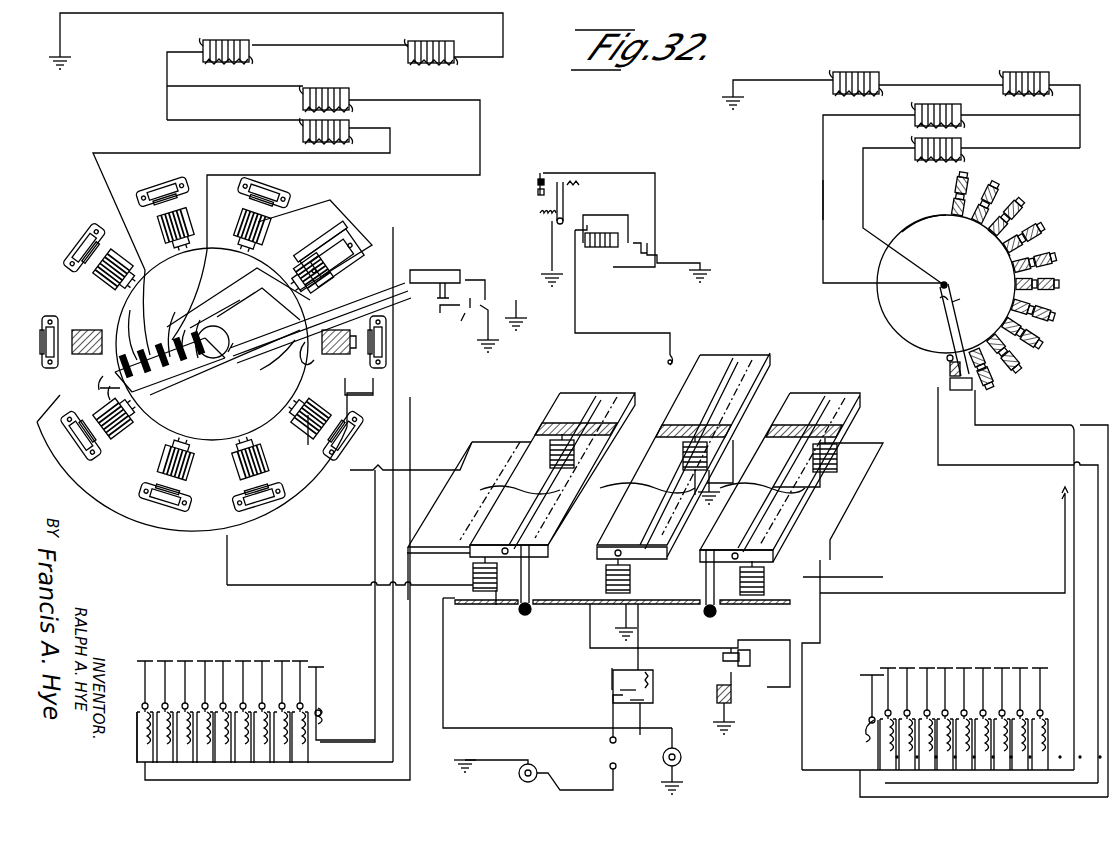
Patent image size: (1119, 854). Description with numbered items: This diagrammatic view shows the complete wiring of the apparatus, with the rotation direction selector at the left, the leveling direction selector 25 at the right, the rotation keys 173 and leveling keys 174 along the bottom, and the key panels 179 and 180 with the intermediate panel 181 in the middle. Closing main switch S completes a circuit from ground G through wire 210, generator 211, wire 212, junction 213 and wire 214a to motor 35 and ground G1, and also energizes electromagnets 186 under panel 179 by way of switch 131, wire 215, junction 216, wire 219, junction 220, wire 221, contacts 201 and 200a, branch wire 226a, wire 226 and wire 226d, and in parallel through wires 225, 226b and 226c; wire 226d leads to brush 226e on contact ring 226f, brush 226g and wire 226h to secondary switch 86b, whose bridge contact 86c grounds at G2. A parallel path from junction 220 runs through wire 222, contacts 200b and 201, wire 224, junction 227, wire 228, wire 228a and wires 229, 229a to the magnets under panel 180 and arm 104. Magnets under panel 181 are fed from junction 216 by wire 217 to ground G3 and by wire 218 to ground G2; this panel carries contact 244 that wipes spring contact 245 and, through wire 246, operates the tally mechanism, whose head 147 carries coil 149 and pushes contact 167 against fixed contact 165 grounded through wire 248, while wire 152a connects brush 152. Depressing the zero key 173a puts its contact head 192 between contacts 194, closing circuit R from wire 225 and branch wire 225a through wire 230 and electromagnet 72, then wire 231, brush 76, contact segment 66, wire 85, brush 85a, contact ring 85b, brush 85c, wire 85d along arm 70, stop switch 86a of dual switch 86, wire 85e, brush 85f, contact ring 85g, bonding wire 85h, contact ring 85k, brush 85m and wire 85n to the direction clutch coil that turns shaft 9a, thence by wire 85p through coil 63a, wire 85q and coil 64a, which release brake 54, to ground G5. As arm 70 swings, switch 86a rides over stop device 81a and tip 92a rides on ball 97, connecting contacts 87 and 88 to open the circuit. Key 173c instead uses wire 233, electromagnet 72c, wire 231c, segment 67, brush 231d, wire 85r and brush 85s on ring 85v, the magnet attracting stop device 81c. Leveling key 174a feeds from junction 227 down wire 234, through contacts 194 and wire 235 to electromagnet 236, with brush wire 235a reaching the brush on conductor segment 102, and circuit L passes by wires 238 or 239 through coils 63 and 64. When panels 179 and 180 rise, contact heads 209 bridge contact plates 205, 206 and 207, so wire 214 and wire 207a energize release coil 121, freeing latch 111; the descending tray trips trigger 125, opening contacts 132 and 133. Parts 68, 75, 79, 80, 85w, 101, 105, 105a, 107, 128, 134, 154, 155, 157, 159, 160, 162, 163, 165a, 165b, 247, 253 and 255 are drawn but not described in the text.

The shaft 9a is at (226, 354).
The dial contacts 25 is at (1062, 229).
The lamp 35 is at (682, 756).
The rotation mechanism 54 is at (44, 258).
The coil 63 is at (859, 73).
The coil 63a is at (219, 42).
The coil 64 is at (1029, 73).
The coil 64a is at (410, 44).
The rotor housing 66 is at (223, 248).
The pole piece 67 is at (276, 422).
The lever 68 is at (312, 356).
The shaft 70 is at (336, 290).
The field coil 72 is at (194, 476).
The coil 72c is at (348, 368).
The coil winding 75 is at (175, 258).
The pole piece 76 is at (182, 262).
The coil 79 is at (258, 470).
The bracket 80 is at (267, 489).
The bracket 81a is at (330, 224).
The bracket 81c is at (388, 364).
The lever plate 85 is at (238, 298).
The wire 85a is at (168, 314).
The wire 85b is at (158, 412).
The wire 85c is at (190, 308).
The wire 85d is at (448, 257).
The wire 85e is at (415, 264).
The wire 85f is at (184, 332).
The commutator 85g is at (200, 360).
The wire 85h is at (193, 382).
The wire 85k is at (116, 364).
The wire 85m is at (122, 327).
The wire 85n is at (423, 175).
The wire 85p is at (222, 97).
The wire 85q is at (291, 45).
The wire 85r is at (216, 430).
The wire 85s is at (148, 436).
The coil 85v is at (108, 330).
The wire 85w is at (197, 152).
The contact 86 is at (491, 312).
The contact 86a is at (484, 298).
The contact 86b is at (476, 338).
The contact 86c is at (444, 303).
The contact 87 is at (452, 280).
The contact 88 is at (486, 288).
The contact 92a is at (461, 318).
The bracket 97 is at (355, 258).
The dial 101 is at (943, 217).
The dial plate 102 is at (878, 304).
The arm 104 is at (964, 310).
The contact 105 is at (1056, 293).
The contact 105a is at (938, 392).
The contact 107 is at (1006, 245).
The switch 111 is at (727, 645).
The coil 121 is at (732, 697).
The contact 125 is at (610, 686).
The contact 128 is at (617, 728).
The contact 131 is at (612, 707).
The contact 132 is at (620, 701).
The contact 133 is at (648, 705).
The contact 134 is at (648, 675).
The wire 147 is at (586, 252).
The contact 149 is at (605, 248).
The relay coil 152 is at (586, 231).
The relay frame 152a is at (641, 218).
The wire 154 is at (590, 174).
The contact 155 is at (628, 252).
The spring 157 is at (580, 190).
The coil 159 is at (544, 218).
The lever 160 is at (558, 238).
The contact 162 is at (552, 180).
The contact 163 is at (540, 186).
The contact 165 is at (649, 246).
The contact 165a is at (543, 171).
The contact 165b is at (540, 206).
The contact 167 is at (646, 231).
The rotation control contacts 173 is at (260, 660).
The contact 173a is at (317, 665).
The contact 173c is at (140, 686).
The leveling control contacts 174 is at (948, 669).
The contact 174a is at (872, 682).
The slab 179 is at (560, 392).
The slab 180 is at (836, 396).
The slab 181 is at (761, 361).
The insulating strip 186 is at (644, 511).
The contact 192 is at (322, 722).
The coil 194 is at (324, 708).
The pin 200a is at (540, 541).
The pin 200b is at (686, 575).
The contact 201 is at (560, 565).
The wire 205 is at (498, 605).
The solenoid 206 is at (622, 572).
The wire 207 is at (758, 603).
The contact 207a is at (746, 667).
The plunger 209 is at (706, 618).
The wire 210 is at (473, 764).
The lamp 211 is at (520, 773).
The wire 212 is at (555, 788).
The switch 213 is at (607, 738).
The wire 214 is at (443, 685).
The wire 214a is at (656, 731).
The relay 215 is at (656, 690).
The wire 216 is at (642, 648).
The wire 217 is at (590, 628).
The wire 218 is at (818, 617).
The wire 219 is at (640, 608).
The contact 220 is at (610, 545).
The contact 221 is at (597, 546).
The contact 222 is at (646, 545).
The contact 224 is at (760, 550).
The wire 225 is at (327, 742).
The wire 225a is at (300, 762).
The wire 226 is at (434, 588).
The wire 226a is at (441, 548).
The wire 226b is at (496, 438).
The wire 226c is at (488, 460).
The wire 226d is at (186, 536).
The wire 226e is at (110, 384).
The wire 226f is at (105, 373).
The wire 226g is at (112, 392).
The housing 226h is at (202, 393).
The wire 227 is at (820, 577).
The wire 228 is at (796, 562).
The wire 228a is at (949, 593).
The plate 229 is at (853, 496).
The wire 229a is at (834, 552).
The wire 230 is at (396, 427).
The wire 231 is at (280, 246).
The wire 231c is at (316, 366).
The wire 231d is at (285, 370).
The wire 233 is at (946, 352).
The wire 234 is at (804, 686).
The wire 235 is at (375, 519).
The contact 235a is at (946, 360).
The contact 236 is at (950, 373).
The wire 238 is at (821, 208).
The wire 239 is at (789, 188).
The wire 244 is at (682, 352).
The switch 245 is at (665, 377).
The wire 246 is at (575, 305).
The wire 247 is at (626, 169).
The wire 248 is at (676, 268).
The wire 253 is at (210, 771).
The wire 255 is at (1065, 559).
The ground G is at (602, 519).
The ground G1 is at (684, 790).
The ground G2 is at (626, 404).
The ground G3 is at (618, 623).
The ground G5 is at (425, 67).
The switch S is at (605, 753).